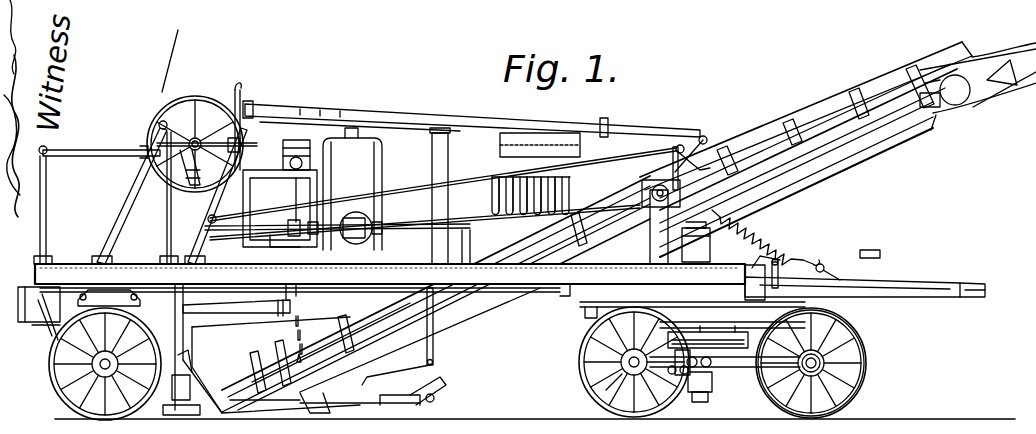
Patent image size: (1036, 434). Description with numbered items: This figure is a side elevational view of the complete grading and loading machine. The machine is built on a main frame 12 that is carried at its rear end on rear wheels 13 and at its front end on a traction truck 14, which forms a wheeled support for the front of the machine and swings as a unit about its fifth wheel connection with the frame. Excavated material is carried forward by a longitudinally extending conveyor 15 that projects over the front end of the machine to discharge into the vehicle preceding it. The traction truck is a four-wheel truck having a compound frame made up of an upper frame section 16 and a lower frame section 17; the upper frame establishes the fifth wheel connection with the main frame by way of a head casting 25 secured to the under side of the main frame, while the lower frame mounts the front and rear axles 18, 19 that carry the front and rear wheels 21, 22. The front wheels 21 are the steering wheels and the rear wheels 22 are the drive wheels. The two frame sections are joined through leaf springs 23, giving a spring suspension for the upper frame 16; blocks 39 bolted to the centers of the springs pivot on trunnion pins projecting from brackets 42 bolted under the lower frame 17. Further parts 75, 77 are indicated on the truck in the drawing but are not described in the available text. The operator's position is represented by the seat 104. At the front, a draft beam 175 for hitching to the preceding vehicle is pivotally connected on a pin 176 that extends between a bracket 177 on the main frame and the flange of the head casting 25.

The main frame 12 is at (497, 294).
The rear wheels 13 is at (68, 381).
The traction truck 14 is at (855, 329).
The conveyor 15 is at (774, 195).
The upper frame section 16 is at (586, 304).
The lower frame section 17 is at (822, 336).
The front axle 18 is at (860, 363).
The rear axle 19 is at (632, 364).
The front wheels 21 is at (850, 383).
The rear wheels 22 is at (604, 389).
The leaf springs 23 is at (698, 338).
The head casting 25 is at (657, 292).
The blocks 39 is at (700, 392).
The brackets 42 is at (706, 372).
The gear 75 is at (683, 372).
The pinion 77 is at (670, 372).
The seat 104 is at (612, 192).
The draft beam 175 is at (928, 300).
The pin 176 is at (790, 232).
The bracket 177 is at (771, 262).